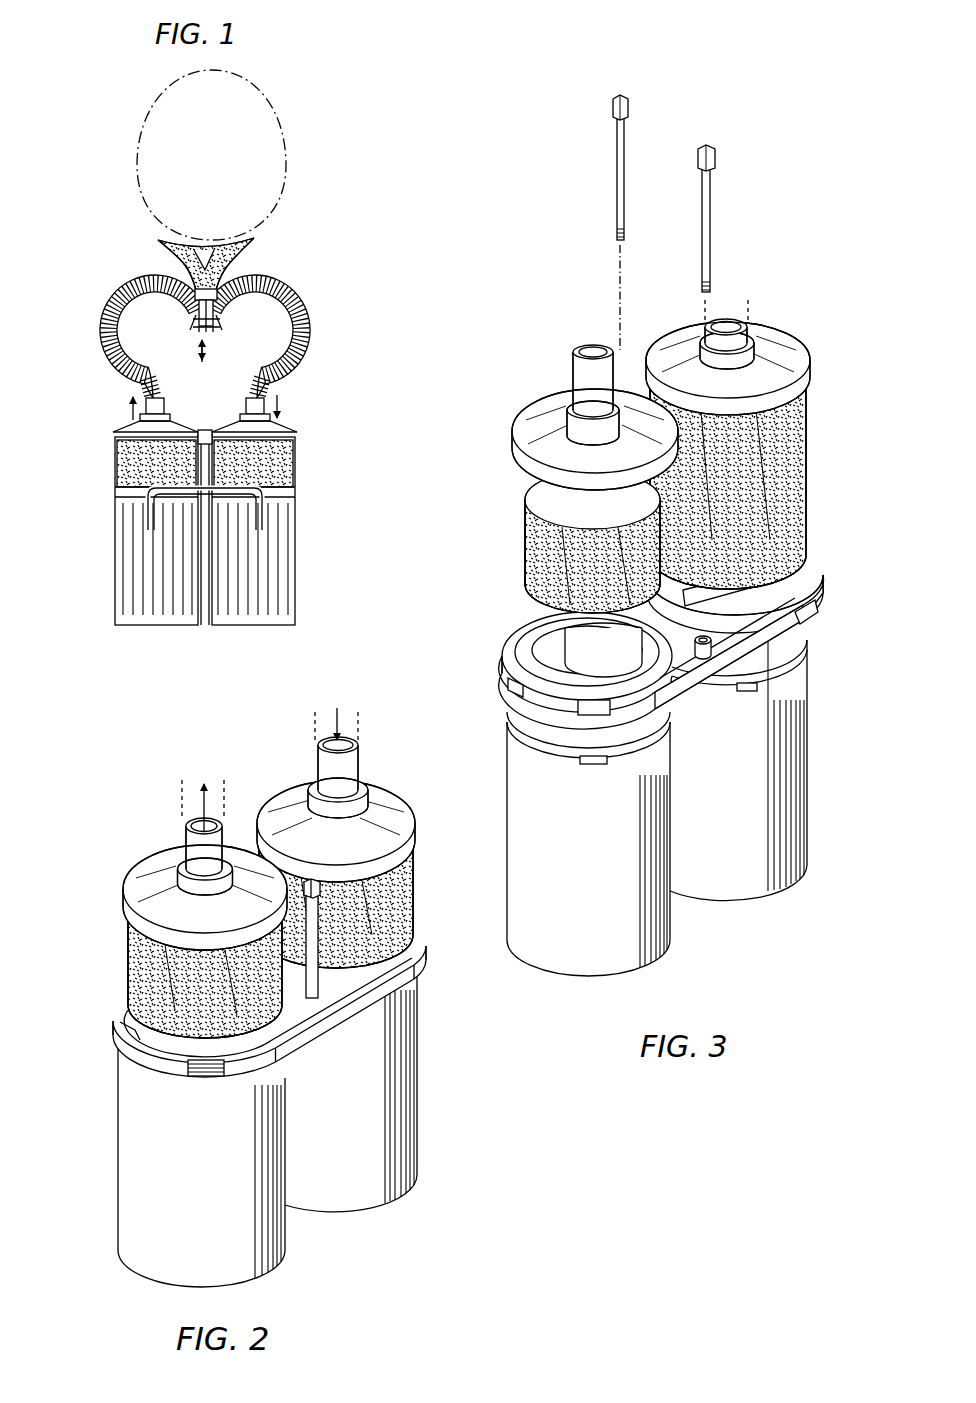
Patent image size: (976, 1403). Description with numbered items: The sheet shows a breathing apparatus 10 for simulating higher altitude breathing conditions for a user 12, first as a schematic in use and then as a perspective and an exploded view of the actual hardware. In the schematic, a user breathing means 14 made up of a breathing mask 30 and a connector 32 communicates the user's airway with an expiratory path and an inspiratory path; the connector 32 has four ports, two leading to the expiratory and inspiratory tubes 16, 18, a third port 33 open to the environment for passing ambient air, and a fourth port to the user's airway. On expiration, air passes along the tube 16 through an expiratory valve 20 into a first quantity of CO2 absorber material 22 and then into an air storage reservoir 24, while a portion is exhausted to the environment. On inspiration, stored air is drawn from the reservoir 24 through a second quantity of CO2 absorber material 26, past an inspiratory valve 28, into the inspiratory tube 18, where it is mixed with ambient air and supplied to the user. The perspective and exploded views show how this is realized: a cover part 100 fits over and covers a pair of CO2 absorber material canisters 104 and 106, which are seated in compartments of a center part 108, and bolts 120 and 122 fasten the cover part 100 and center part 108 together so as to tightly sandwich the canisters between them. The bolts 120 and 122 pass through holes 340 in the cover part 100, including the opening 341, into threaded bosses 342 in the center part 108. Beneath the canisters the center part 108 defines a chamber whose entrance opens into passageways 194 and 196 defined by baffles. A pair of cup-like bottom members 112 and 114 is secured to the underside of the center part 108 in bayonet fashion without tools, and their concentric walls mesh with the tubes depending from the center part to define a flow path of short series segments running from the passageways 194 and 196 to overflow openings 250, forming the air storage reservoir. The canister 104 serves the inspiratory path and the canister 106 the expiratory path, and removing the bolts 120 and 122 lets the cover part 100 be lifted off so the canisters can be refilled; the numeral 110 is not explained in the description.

In FIG. 1, the breathing apparatus 10 is at (307, 383).
In FIG. 1, the user 12 is at (287, 180).
In FIG. 1, the user breathing means 14 is at (242, 277).
In FIG. 1, the expiratory tube 16 is at (313, 321).
In FIG. 1, the inspiratory tube 18 is at (99, 319).
In FIG. 1, the expiratory valve 20 is at (241, 418).
In FIG. 1, the first quantity of CO2 absorber material 22 is at (297, 475).
In FIG. 1, the air storage reservoir 24 is at (222, 627).
In FIG. 1, the second quantity of CO2 absorber material 26 is at (113, 468).
In FIG. 1, the inspiratory valve 28 is at (166, 415).
In FIG. 1, the breathing mask 30 is at (160, 247).
In FIG. 1, the connector 32 is at (215, 321).
In FIG. 1, the third port 33 is at (197, 329).
In FIG. 2, the cover part 100 is at (121, 893).
In FIG. 3, the cover part 100 is at (817, 327).
In FIG. 2, the CO2 absorber material canister 104 is at (125, 974).
In FIG. 3, the CO2 absorber material canister 104 is at (522, 560).
In FIG. 2, the CO2 absorber material canister 106 is at (351, 838).
In FIG. 3, the CO2 absorber material canister 106 is at (802, 453).
In FIG. 2, the center part 108 is at (424, 951).
In FIG. 3, the center part 108 is at (653, 557).
In FIG. 2, the housing assembly 110 is at (267, 1131).
In FIG. 3, the housing assembly 110 is at (657, 818).
In FIG. 2, the cup-like bottom member 112 is at (118, 1200).
In FIG. 3, the cup-like bottom member 112 is at (655, 966).
In FIG. 2, the cup-like bottom member 114 is at (418, 1112).
In FIG. 3, the cup-like bottom member 114 is at (757, 900).
In FIG. 2, the bolt 120 is at (228, 826).
In FIG. 3, the bolt 120 is at (616, 196).
In FIG. 2, the bolt 122 is at (380, 893).
In FIG. 3, the bolt 122 is at (711, 215).
In FIG. 3, the passageway 194 is at (585, 641).
In FIG. 3, the passageway 196 is at (810, 627).
In FIG. 3, the overflow opening 250 is at (516, 683).
In FIG. 3, the hole 340 is at (709, 437).
In FIG. 3, the opening 341 is at (613, 372).
In FIG. 3, the threaded boss 342 is at (719, 645).